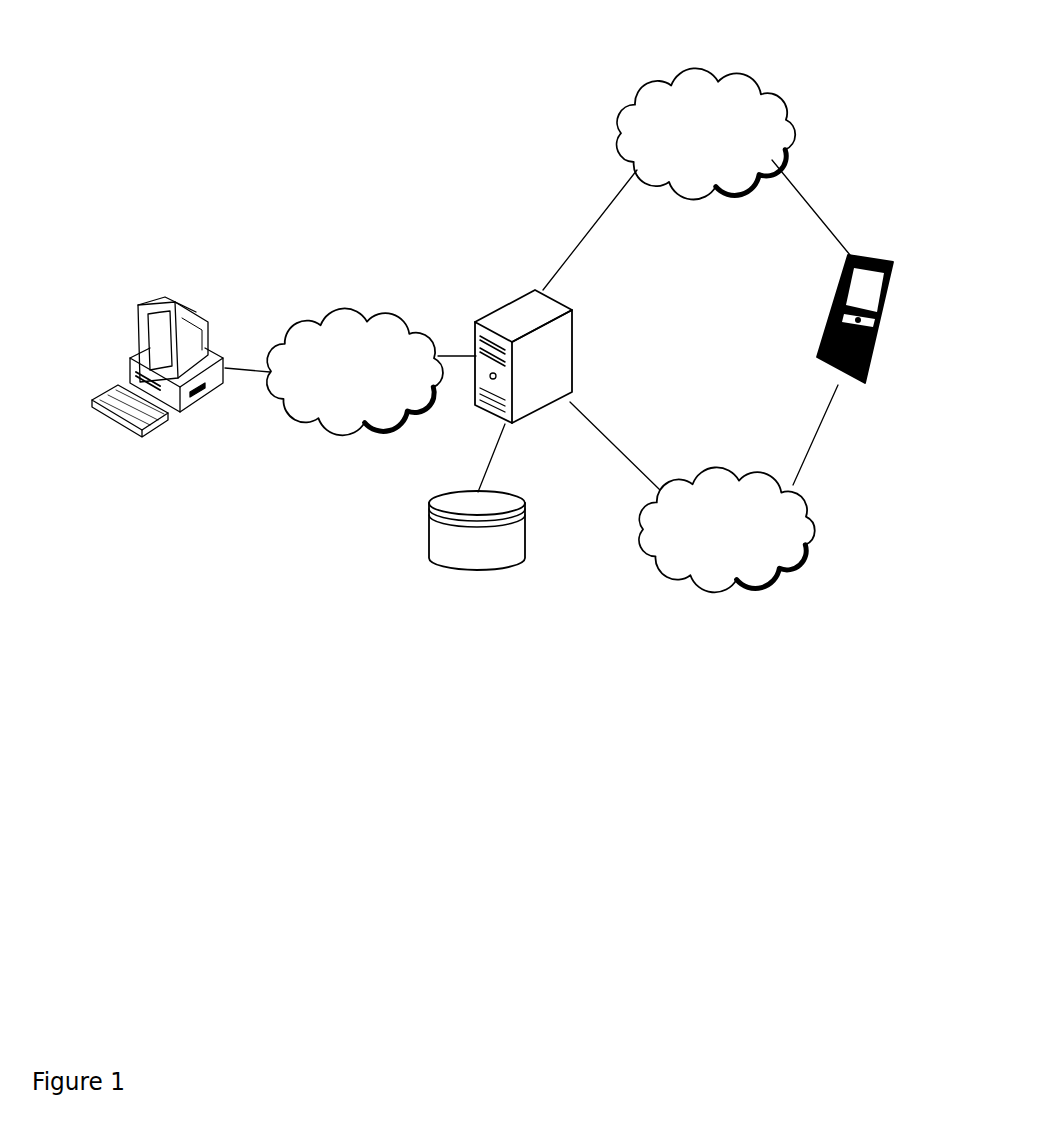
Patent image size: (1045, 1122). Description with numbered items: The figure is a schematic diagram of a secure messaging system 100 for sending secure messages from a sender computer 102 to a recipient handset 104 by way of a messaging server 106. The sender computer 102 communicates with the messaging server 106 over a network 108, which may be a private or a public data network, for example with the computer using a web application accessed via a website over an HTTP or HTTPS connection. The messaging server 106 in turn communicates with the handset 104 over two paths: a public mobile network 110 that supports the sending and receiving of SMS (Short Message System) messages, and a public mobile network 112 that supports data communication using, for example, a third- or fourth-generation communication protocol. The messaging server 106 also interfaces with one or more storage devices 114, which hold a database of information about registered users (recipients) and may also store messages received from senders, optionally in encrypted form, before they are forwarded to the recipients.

The system 100 is at (268, 138).
The computer 102 is at (183, 408).
The mobile device 104 is at (830, 318).
The server 106 is at (508, 306).
The network 108 is at (336, 315).
The network 110 is at (753, 74).
The network 112 is at (723, 588).
The database 114 is at (478, 571).